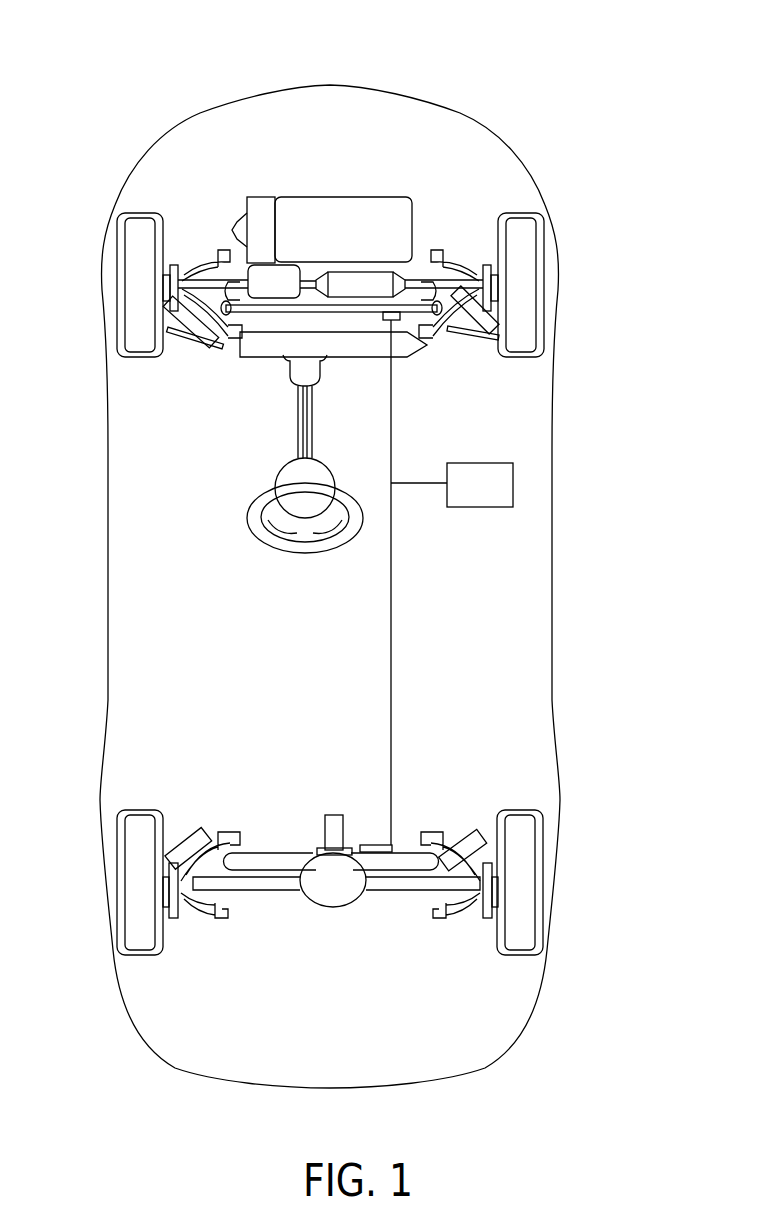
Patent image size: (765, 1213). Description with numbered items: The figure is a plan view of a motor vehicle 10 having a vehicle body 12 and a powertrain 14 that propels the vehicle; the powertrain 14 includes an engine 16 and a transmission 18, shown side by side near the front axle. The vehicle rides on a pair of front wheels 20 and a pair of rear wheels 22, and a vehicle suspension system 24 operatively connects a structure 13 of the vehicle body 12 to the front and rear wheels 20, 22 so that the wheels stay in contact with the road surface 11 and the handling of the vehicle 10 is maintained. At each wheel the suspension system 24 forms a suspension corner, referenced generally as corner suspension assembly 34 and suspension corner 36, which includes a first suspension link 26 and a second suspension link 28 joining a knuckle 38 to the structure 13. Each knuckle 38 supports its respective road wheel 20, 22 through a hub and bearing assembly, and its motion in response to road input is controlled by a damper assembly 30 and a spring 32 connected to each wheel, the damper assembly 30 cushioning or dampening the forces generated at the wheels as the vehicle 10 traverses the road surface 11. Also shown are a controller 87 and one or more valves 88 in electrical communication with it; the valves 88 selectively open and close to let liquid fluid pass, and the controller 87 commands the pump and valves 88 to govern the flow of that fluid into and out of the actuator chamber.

The motor vehicle 10 is at (585, 466).
The road surface 11 is at (133, 80).
The vehicle body 12 is at (553, 587).
The structure 13 is at (493, 243).
The powertrain 14 is at (296, 172).
The engine 16 is at (338, 200).
The transmission 18 is at (257, 197).
The front wheels 20 is at (115, 244).
The rear wheels 22 is at (115, 908).
The vehicle suspension system 24 is at (174, 356).
The first suspension link 26 is at (233, 334).
The second suspension link 28 is at (200, 270).
The damper assembly 30 is at (195, 338).
The spring 32 is at (178, 313).
The corner suspension assembly 34 is at (172, 238).
The suspension corner 36 is at (479, 235).
The knuckle 38 is at (192, 245).
The controller 87 is at (498, 470).
The valves 88 is at (387, 323).